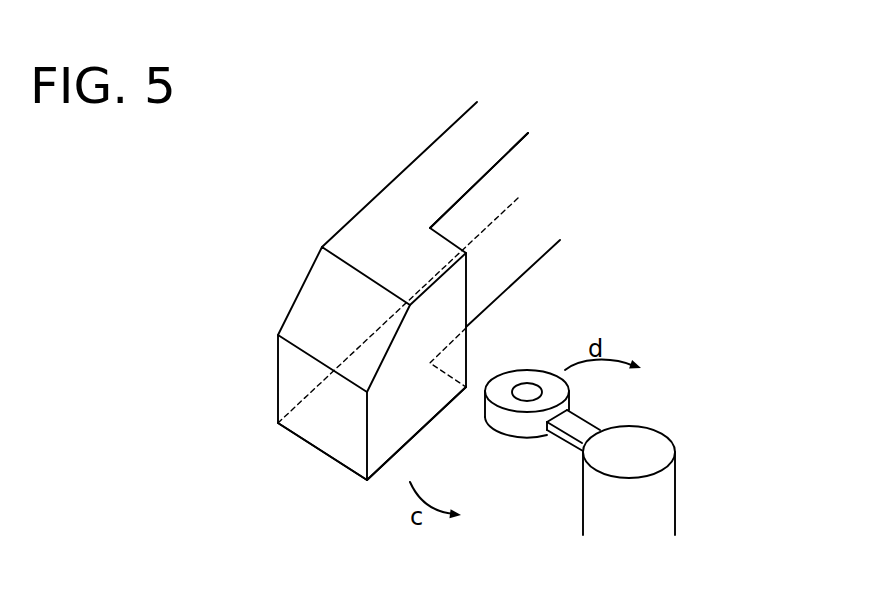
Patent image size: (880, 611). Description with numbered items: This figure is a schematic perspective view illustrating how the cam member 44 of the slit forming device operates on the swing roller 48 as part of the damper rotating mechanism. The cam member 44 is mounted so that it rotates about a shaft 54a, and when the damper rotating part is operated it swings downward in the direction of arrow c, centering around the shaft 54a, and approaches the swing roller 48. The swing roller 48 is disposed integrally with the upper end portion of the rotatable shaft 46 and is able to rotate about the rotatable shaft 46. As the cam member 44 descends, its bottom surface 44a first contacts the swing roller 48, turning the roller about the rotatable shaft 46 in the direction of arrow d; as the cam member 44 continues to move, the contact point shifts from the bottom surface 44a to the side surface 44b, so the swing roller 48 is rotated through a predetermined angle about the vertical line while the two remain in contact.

The cam member 44 is at (284, 282).
The bottom surface 44a is at (345, 433).
The side surface 44b is at (417, 417).
The rotatable shaft 46 is at (667, 502).
The swing roller 48 is at (528, 370).
The shaft 54a is at (541, 202).